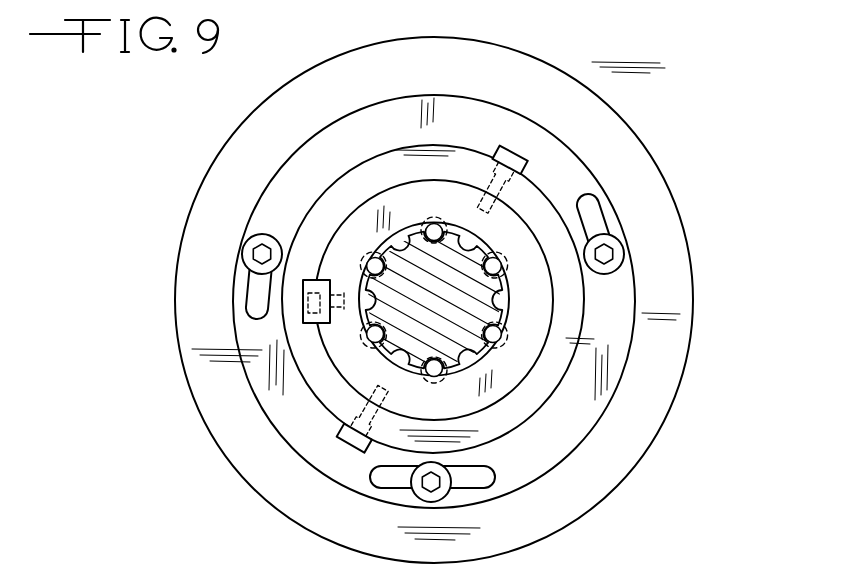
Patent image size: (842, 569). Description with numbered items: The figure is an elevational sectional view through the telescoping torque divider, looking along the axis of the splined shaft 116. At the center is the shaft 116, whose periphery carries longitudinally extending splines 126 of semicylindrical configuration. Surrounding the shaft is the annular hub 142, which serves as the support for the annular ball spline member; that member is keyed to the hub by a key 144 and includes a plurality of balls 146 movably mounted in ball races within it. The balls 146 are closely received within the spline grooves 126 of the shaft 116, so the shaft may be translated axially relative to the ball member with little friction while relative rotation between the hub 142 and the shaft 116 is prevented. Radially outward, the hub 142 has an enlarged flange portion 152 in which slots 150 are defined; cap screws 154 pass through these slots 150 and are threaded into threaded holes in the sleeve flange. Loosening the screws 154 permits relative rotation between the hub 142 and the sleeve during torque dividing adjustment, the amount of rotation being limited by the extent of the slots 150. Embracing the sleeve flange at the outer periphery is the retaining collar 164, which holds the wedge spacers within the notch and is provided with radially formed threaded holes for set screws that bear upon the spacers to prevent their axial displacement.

The splined shaft 116 is at (463, 298).
The splines 126 is at (467, 350).
The annular hub 142 is at (323, 385).
The key 144 is at (303, 302).
The balls 146 is at (438, 377).
The slots 150 is at (605, 218).
The enlarged flange portion 152 is at (613, 353).
The cap screws 154 is at (242, 255).
The retaining collar 164 is at (620, 437).